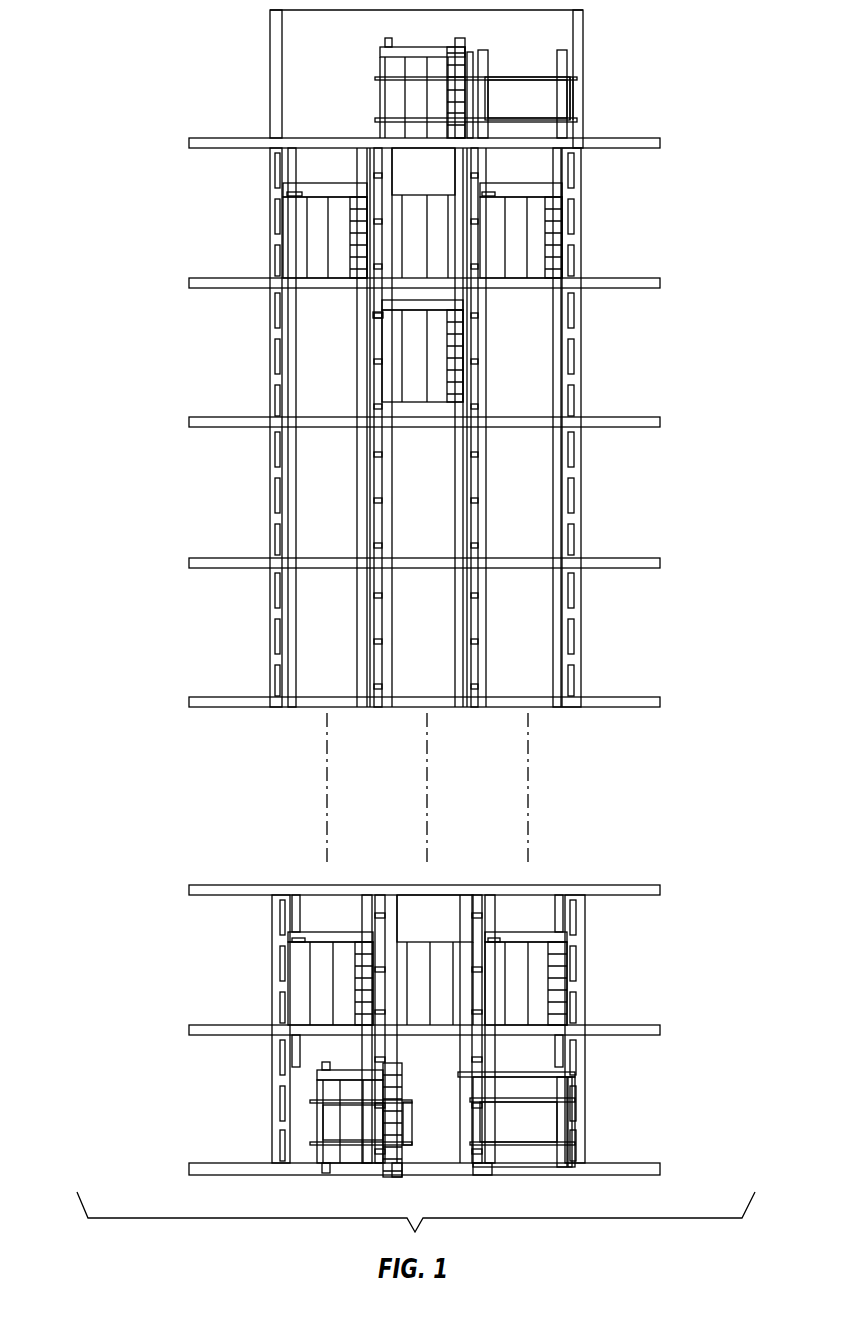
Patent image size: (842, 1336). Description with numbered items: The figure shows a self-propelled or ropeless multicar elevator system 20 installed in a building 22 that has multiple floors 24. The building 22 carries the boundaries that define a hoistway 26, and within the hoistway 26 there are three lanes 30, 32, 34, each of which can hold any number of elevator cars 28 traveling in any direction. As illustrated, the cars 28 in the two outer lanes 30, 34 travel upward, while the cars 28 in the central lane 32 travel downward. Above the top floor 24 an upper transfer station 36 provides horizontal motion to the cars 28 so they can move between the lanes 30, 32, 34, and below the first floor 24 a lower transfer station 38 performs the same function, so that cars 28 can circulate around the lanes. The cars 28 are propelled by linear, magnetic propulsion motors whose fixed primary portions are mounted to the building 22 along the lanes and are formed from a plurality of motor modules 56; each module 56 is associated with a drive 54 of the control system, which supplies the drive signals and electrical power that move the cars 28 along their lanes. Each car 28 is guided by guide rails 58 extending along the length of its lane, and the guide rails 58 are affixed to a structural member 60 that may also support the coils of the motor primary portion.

The elevator system 20 is at (152, 57).
The building 22 is at (600, 27).
The floors 24 is at (640, 290).
The hoistway 26 is at (307, 716).
The car 28 is at (318, 247).
The lane 30 is at (305, 627).
The lane 32 is at (407, 627).
The lane 34 is at (505, 627).
The upper transfer station 36 is at (316, 93).
The lower transfer station 38 is at (278, 1110).
The drive 54 is at (277, 362).
The motor module 56 is at (262, 182).
The guide rail 58 is at (557, 508).
The structural member 60 is at (272, 430).